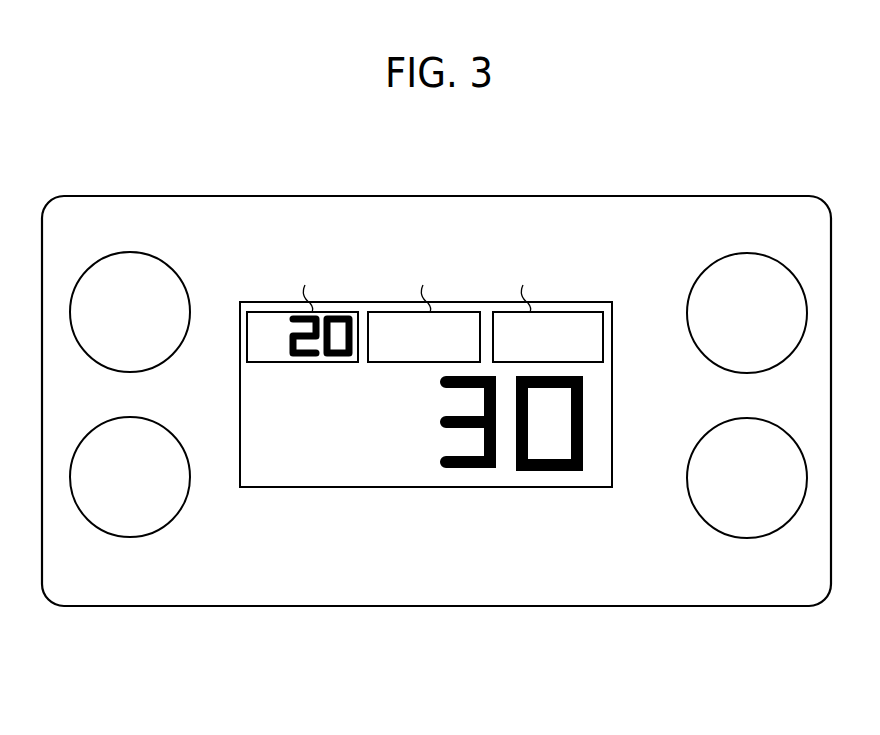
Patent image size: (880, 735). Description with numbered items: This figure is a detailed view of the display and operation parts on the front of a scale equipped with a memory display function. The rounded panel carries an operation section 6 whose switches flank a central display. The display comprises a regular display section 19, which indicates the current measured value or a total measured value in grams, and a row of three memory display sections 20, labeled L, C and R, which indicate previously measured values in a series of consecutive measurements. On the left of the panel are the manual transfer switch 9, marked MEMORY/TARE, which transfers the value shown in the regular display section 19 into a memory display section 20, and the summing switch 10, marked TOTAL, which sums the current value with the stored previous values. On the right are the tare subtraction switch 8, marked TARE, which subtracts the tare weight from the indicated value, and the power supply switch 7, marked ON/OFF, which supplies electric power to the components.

The operation section 6 is at (368, 607).
The power supply switch 7 is at (758, 537).
The tare subtraction switch 8 is at (765, 255).
The manual transfer switch 9 is at (172, 270).
The summing switch 10 is at (118, 537).
The regular display section 19 is at (350, 488).
The memory display sections 20 is at (543, 257).